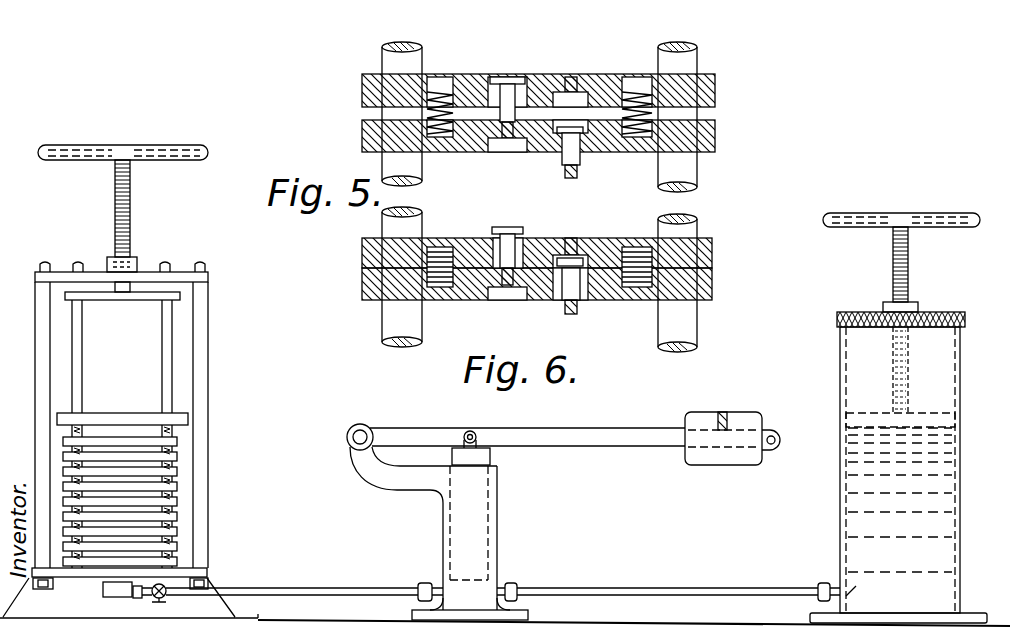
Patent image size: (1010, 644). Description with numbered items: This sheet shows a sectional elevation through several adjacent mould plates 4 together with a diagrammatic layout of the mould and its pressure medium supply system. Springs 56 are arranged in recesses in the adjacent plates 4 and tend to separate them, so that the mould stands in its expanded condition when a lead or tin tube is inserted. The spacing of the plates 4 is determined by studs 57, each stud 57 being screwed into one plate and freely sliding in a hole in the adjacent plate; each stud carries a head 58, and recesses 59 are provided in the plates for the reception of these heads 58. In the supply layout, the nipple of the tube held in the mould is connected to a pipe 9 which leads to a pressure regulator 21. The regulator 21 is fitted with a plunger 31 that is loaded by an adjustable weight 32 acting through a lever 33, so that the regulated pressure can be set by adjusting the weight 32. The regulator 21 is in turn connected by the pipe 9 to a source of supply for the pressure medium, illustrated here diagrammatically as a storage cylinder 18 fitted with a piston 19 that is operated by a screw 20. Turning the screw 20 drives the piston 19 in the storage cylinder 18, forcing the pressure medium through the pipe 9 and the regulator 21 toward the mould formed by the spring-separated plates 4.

In FIG. 5, the plate 4 is at (362, 92).
In FIG. 6, the plate 4 is at (177, 473).
In FIG. 6, the pipe 9 is at (293, 589).
In FIG. 6, the storage cylinder 18 is at (962, 398).
In FIG. 6, the piston 19 is at (857, 420).
In FIG. 6, the screw 20 is at (893, 262).
In FIG. 6, the pressure regulator 21 is at (443, 531).
In FIG. 6, the plunger 31 is at (498, 523).
In FIG. 6, the adjustable weight 32 is at (710, 459).
In FIG. 6, the lever 33 is at (588, 448).
In FIG. 5, the spring 56 is at (438, 137).
In FIG. 6, the spring 56 is at (438, 262).
In FIG. 5, the stud 57 is at (511, 96).
In FIG. 6, the stud 57 is at (569, 290).
In FIG. 5, the head 58 is at (497, 76).
In FIG. 6, the head 58 is at (503, 227).
In FIG. 5, the recess 59 is at (513, 146).
In FIG. 6, the recess 59 is at (523, 243).